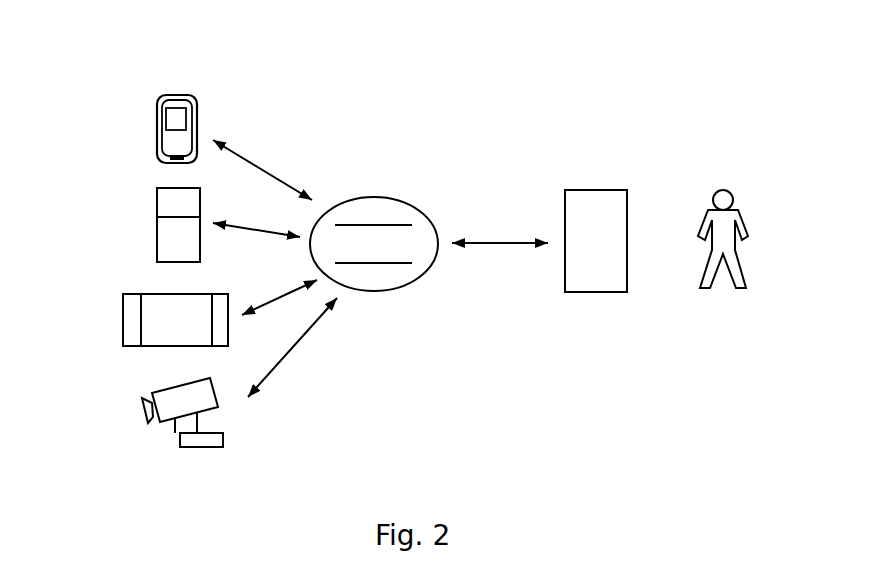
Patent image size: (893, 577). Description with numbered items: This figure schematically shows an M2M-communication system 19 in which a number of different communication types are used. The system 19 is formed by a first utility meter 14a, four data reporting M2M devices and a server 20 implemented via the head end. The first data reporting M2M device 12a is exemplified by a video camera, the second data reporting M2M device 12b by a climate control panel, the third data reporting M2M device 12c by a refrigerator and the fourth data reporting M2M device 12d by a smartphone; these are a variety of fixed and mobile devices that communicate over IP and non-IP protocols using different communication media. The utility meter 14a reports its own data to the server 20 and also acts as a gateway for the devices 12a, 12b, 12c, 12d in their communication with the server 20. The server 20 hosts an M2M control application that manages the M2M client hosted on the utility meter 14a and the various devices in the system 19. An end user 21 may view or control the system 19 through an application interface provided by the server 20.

The first data reporting M2M device 12a is at (180, 443).
The second data reporting M2M device 12b is at (123, 313).
The third data reporting M2M device 12c is at (157, 231).
The fourth data reporting M2M device 12d is at (157, 124).
The first utility meter 14a is at (396, 197).
The M2M system 19 is at (692, 82).
The server 20 is at (600, 190).
The end user 21 is at (745, 217).